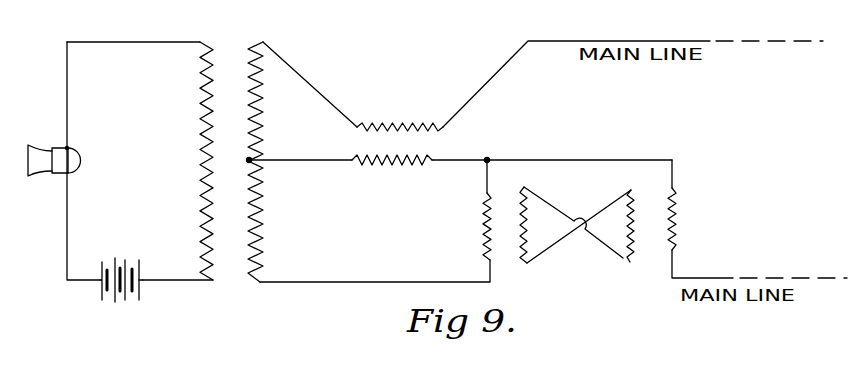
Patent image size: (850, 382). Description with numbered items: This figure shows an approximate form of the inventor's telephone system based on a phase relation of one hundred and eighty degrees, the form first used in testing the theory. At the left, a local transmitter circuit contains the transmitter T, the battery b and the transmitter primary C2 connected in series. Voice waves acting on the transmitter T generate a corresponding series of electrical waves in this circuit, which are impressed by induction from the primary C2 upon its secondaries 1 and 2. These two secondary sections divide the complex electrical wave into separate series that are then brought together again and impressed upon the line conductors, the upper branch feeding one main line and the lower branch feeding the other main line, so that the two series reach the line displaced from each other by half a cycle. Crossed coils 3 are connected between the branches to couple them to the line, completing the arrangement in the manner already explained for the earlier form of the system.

The secondary of primary coil 1 is at (535, 153).
The secondary of primary coil 2 is at (460, 101).
The line 3 is at (577, 236).
The transmitter T is at (54, 149).
The transmitter primary C2 is at (186, 161).
The battery b is at (121, 294).